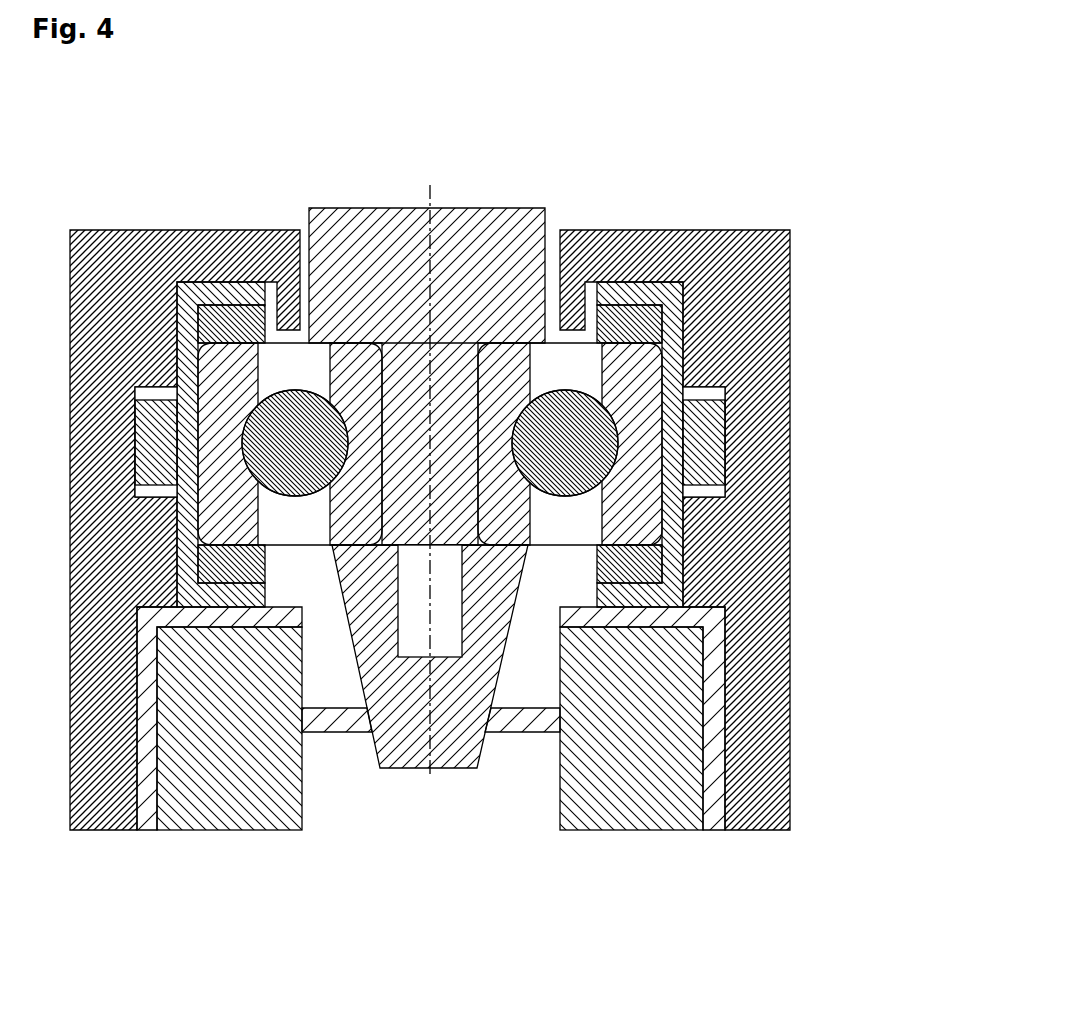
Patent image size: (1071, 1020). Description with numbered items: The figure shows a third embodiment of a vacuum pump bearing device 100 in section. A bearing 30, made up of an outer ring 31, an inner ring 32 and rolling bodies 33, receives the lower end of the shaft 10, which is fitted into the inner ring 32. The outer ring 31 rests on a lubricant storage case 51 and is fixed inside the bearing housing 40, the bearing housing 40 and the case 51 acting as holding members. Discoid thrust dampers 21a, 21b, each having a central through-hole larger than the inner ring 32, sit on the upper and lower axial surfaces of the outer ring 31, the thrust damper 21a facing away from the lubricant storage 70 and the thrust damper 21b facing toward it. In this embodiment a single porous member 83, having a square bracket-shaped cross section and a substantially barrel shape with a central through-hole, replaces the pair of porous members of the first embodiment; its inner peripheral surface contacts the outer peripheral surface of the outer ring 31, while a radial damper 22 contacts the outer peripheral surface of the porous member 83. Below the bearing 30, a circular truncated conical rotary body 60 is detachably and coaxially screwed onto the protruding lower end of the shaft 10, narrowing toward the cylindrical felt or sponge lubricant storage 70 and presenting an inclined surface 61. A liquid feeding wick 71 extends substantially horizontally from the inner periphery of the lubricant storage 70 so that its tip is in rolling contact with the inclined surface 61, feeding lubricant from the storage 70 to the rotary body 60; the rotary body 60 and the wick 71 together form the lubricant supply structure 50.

The bearing device 100 is at (723, 130).
The shaft 10 is at (490, 250).
The thrust damper 21a is at (218, 312).
The thrust damper 21b is at (635, 565).
The radial damper 22 is at (158, 440).
The bearing 30 is at (185, 358).
The outer ring 31 is at (233, 432).
The inner ring 32 is at (343, 382).
The rolling bodies 33 is at (262, 488).
The bearing housing 40 is at (735, 270).
The lubricant supply structure 50 is at (432, 745).
The lubricant storage case 51 is at (230, 612).
The rotary body 60 is at (483, 683).
The inclined surface 61 is at (355, 732).
The lubricant storage 70 is at (658, 765).
The liquid feeding wick 71 is at (545, 722).
The porous member 83 is at (673, 448).